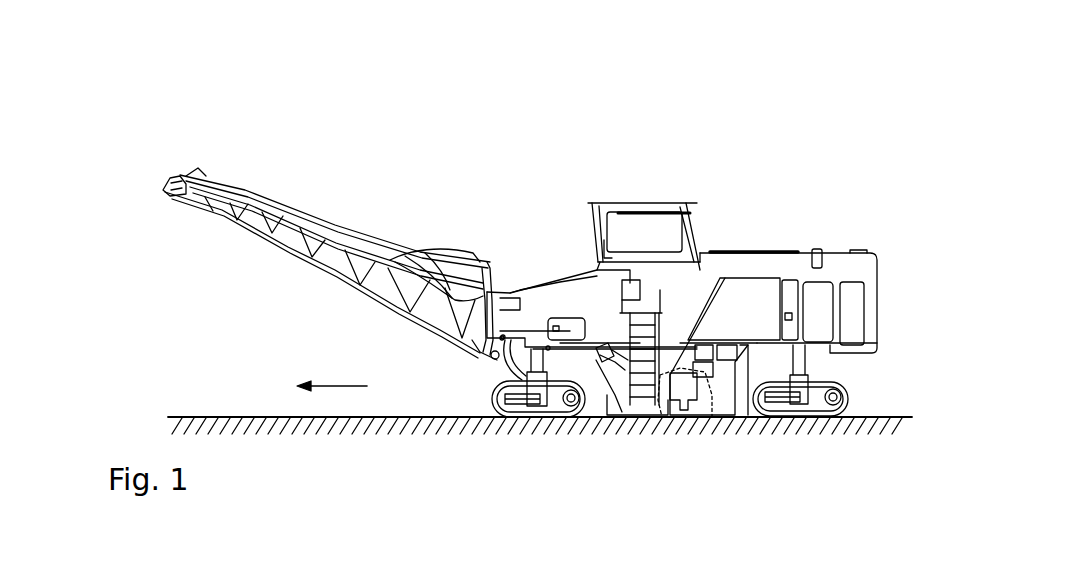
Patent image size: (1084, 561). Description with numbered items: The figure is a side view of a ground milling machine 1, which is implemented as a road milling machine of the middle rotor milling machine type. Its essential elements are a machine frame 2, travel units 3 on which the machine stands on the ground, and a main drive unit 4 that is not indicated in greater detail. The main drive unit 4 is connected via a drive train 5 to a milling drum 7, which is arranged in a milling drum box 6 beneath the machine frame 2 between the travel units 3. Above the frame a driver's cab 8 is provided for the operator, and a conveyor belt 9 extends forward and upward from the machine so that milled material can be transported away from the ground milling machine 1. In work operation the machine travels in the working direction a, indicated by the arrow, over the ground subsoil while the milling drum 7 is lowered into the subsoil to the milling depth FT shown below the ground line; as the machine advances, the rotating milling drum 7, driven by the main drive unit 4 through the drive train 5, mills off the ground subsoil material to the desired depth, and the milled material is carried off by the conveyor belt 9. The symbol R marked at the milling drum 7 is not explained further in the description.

The ground milling machine 1 is at (758, 180).
The machine frame 2 is at (597, 340).
The travel units 3 is at (520, 397).
The main drive unit 4 is at (766, 316).
The drive train 5 is at (722, 337).
The milling drum box 6 is at (622, 392).
The milling drum 7 is at (638, 340).
The driver's cab 8 is at (645, 226).
The conveyor belt 9 is at (288, 212).
The milling drum R is at (683, 397).
The milling depth FT is at (713, 424).
The working direction a is at (317, 385).